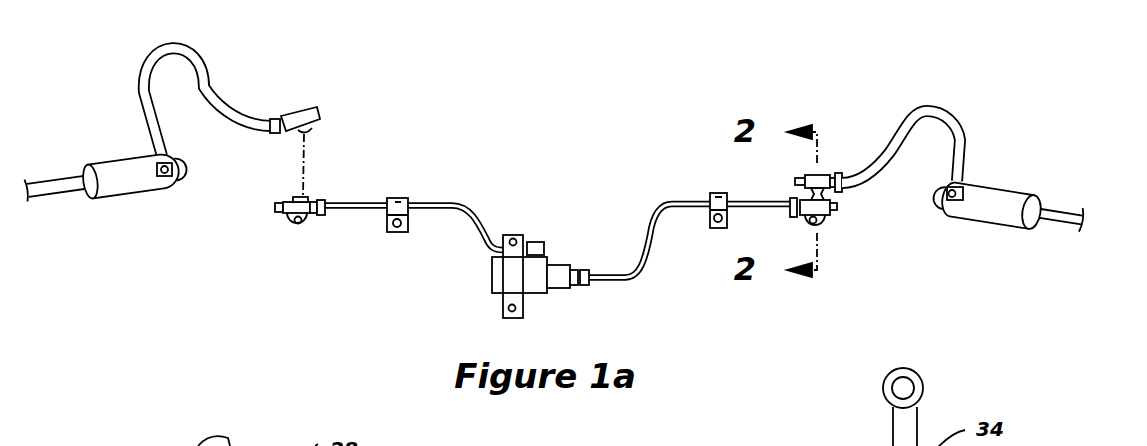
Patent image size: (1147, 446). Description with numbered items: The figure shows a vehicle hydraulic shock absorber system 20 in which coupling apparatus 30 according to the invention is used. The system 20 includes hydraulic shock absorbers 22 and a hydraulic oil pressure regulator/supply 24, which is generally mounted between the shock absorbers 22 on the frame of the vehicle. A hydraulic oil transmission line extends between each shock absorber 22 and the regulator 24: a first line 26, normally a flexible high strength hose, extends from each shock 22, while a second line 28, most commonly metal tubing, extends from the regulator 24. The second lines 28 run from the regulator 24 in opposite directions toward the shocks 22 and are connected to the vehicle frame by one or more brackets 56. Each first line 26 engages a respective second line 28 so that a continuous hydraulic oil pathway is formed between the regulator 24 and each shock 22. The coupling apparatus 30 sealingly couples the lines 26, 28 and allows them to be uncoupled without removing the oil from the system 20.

The hydraulic shock absorber system 20 is at (1012, 113).
The hydraulic shock absorber 22 is at (1017, 187).
The hydraulic oil pressure regulator/supply 24 is at (490, 272).
The first line 26 is at (221, 117).
The second line 28 is at (473, 210).
The coupling apparatus 30 is at (277, 230).
The bracket 56 is at (397, 197).